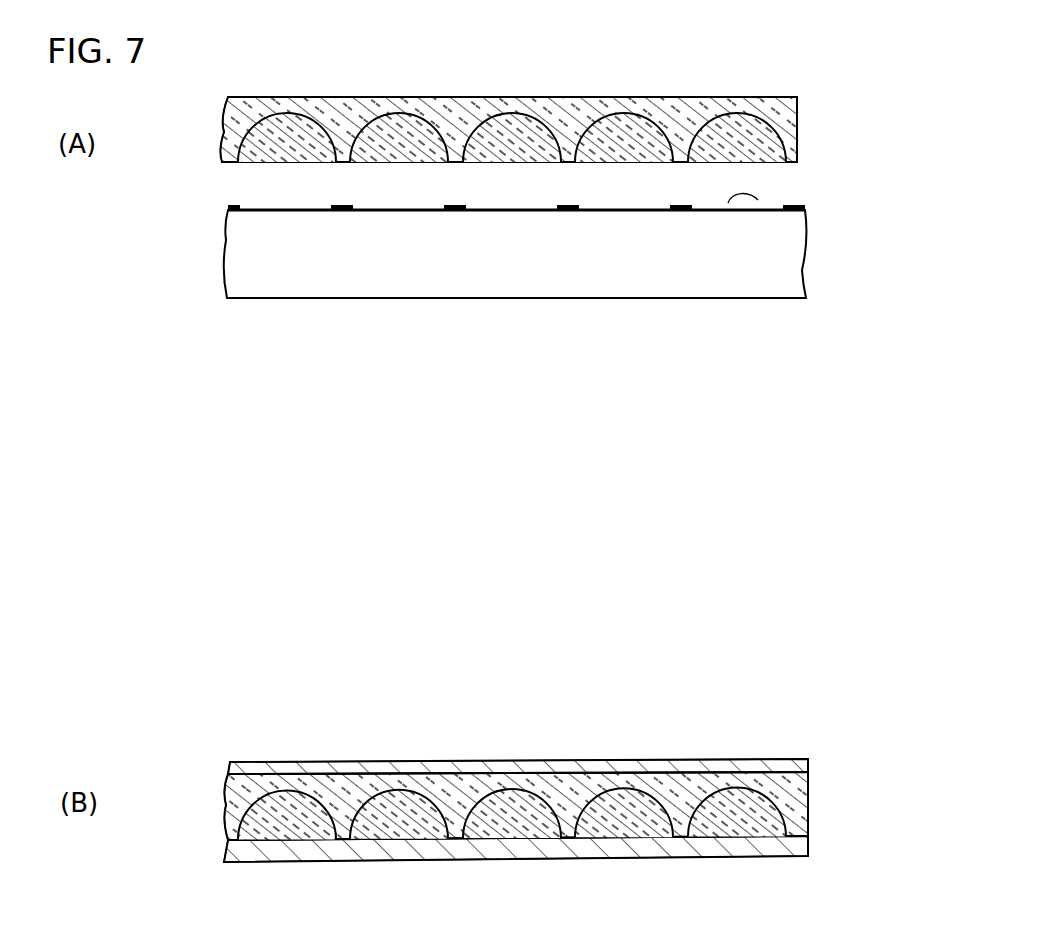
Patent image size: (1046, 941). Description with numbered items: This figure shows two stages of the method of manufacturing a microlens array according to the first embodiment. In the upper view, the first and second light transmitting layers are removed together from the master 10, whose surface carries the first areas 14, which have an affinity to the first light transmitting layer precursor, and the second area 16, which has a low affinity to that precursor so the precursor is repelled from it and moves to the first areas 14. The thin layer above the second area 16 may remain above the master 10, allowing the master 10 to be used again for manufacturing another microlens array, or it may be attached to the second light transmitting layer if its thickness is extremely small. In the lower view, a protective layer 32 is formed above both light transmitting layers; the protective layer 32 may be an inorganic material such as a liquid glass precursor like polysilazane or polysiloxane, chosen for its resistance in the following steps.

The master 10 is at (788, 253).
The first areas 14 is at (758, 200).
The second area 16 is at (683, 205).
The protective layer 32 is at (808, 761).